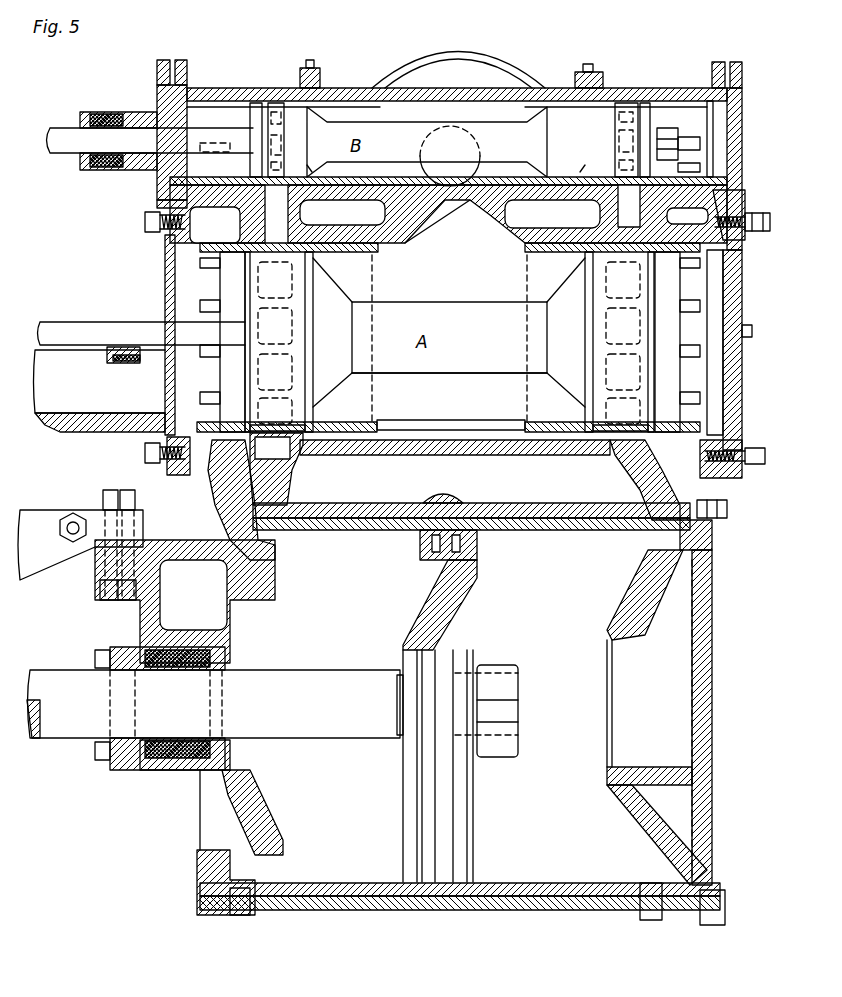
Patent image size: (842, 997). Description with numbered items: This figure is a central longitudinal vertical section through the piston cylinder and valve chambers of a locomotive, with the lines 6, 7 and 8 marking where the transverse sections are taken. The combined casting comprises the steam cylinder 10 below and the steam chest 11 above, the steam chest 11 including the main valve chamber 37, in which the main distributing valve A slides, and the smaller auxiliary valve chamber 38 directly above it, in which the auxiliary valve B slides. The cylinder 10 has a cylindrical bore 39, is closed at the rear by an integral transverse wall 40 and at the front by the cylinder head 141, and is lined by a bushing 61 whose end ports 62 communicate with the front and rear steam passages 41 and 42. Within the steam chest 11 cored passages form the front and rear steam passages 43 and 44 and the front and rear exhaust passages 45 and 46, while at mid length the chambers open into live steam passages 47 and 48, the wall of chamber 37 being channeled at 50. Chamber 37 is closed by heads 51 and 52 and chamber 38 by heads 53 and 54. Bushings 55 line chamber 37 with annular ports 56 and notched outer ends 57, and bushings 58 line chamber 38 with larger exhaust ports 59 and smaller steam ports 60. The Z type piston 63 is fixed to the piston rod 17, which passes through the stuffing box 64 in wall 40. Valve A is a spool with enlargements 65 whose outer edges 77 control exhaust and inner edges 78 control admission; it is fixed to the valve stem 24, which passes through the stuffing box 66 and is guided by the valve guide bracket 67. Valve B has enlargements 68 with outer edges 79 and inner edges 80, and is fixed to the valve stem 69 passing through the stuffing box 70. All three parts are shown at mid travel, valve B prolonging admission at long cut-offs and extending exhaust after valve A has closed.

The section line 6— 6 is at (213, 490).
The section line 7— 7 is at (275, 490).
The section line 8— 8 is at (447, 480).
The steam cylinder 10 is at (545, 906).
The steam chest 11 is at (728, 278).
The piston rod 17 is at (44, 740).
The valve stem 24 is at (46, 322).
The valve chamber 37 is at (712, 256).
The valve chamber 38 is at (722, 110).
The bore 39 is at (278, 912).
The transverse wall 40 is at (225, 790).
The front steam passage 41 is at (660, 488).
The rear steam passage 42 is at (300, 458).
The front steam passage 43 is at (552, 214).
The rear steam passage 44 is at (342, 213).
The front exhaust passage 45 is at (748, 210).
The rear exhaust passage 46 is at (148, 228).
The live steam passage 47 is at (502, 420).
The live steam passage 48 is at (497, 105).
The enlarged channel 50 is at (450, 226).
The front head 51 is at (752, 331).
The rear head 52 is at (165, 389).
The front head 53 is at (742, 130).
The rear head 54 is at (157, 86).
The bushing 55 is at (378, 247).
The ports 56 is at (294, 350).
The notch 57 is at (210, 358).
The bushing 58 is at (231, 88).
The port openings 59 is at (700, 170).
The port openings 60 is at (285, 124).
The bushing 61 is at (575, 530).
The ports 62 is at (648, 560).
The piston 63 is at (430, 616).
The stuffing box 64 is at (165, 771).
The cylindrical enlargements 65 is at (256, 273).
The stuffing box 66 is at (118, 345).
The valve guide bracket 67 is at (84, 430).
The cylindrical enlargements 68 is at (300, 100).
The valve stem 69 is at (52, 152).
The stuffing box 70 is at (99, 112).
The outer end edges 77 is at (250, 420).
The inner end edges 78 is at (313, 412).
The outer end edges 79 is at (250, 110).
The inner end edges 80 is at (312, 172).
The cylinder head 141 is at (712, 692).